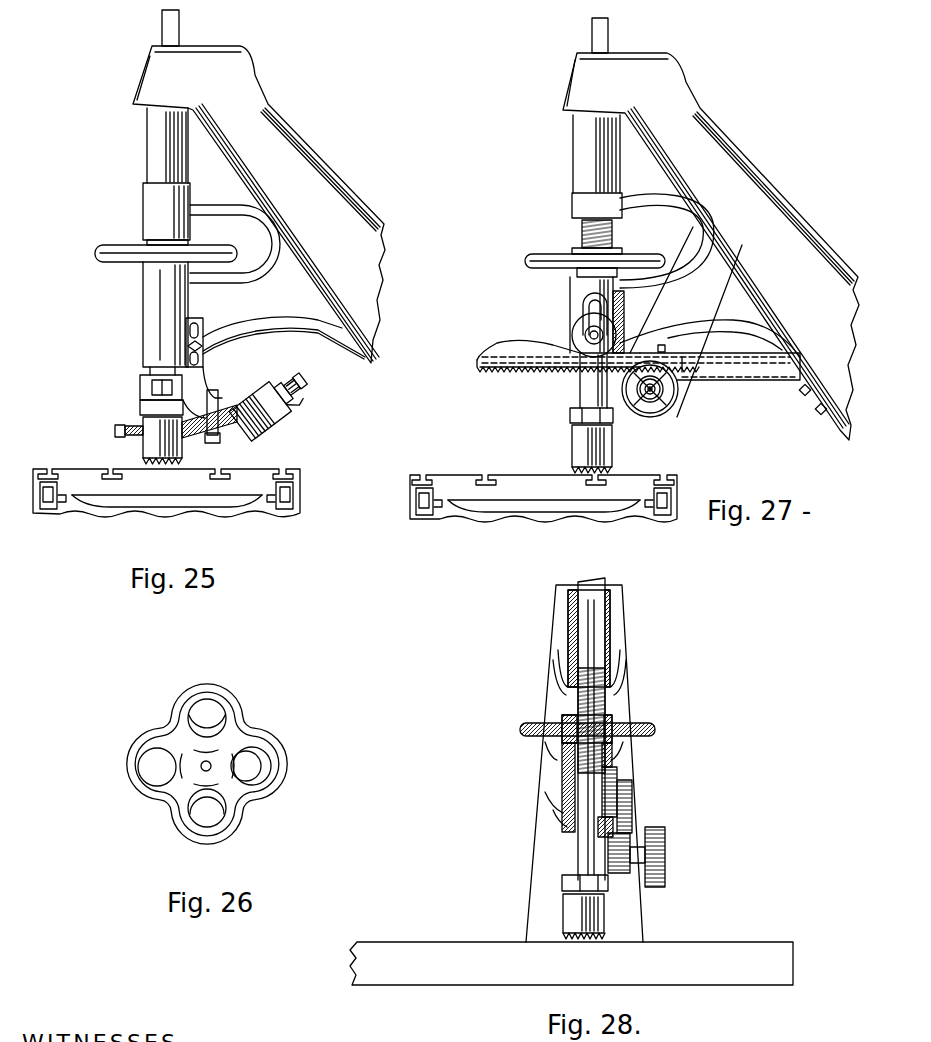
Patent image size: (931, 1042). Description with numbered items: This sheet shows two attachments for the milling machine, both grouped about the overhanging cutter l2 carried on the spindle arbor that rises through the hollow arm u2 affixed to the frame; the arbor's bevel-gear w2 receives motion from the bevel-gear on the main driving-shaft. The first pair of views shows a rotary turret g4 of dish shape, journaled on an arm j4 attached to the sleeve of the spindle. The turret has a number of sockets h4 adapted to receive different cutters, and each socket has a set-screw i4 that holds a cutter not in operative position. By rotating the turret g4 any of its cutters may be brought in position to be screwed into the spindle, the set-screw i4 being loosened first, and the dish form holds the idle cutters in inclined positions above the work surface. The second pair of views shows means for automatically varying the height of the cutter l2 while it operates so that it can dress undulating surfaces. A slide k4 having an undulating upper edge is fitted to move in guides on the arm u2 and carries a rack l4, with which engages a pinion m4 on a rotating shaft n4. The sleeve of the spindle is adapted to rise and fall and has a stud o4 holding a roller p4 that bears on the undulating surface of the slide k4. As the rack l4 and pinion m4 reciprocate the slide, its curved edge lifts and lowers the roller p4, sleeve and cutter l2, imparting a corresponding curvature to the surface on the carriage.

In FIG. 25, the hollow arm u2 is at (259, 186).
In FIG. 27, the bevel-gear w2 is at (711, 229).
In FIG. 25, the set-screw i4 is at (120, 427).
In FIG. 25, the arm j4 is at (209, 384).
In FIG. 25, the rotary turret g4 is at (227, 394).
In FIG. 26, the rotary turret g4 is at (200, 773).
In FIG. 26, the socket h4 is at (222, 713).
In FIG. 27, the slide k4 is at (520, 347).
In FIG. 27, the rack l4 is at (530, 370).
In FIG. 27, the pinion m4 is at (680, 392).
In FIG. 27, the rotating shaft n4 is at (665, 408).
In FIG. 27, the stud o4 is at (573, 334).
In FIG. 27, the roller p4 is at (627, 320).
In FIG. 25, the cutter l2 is at (285, 428).
In FIG. 27, the cutter l2 is at (612, 444).
In FIG. 28, the cutter l2 is at (606, 915).